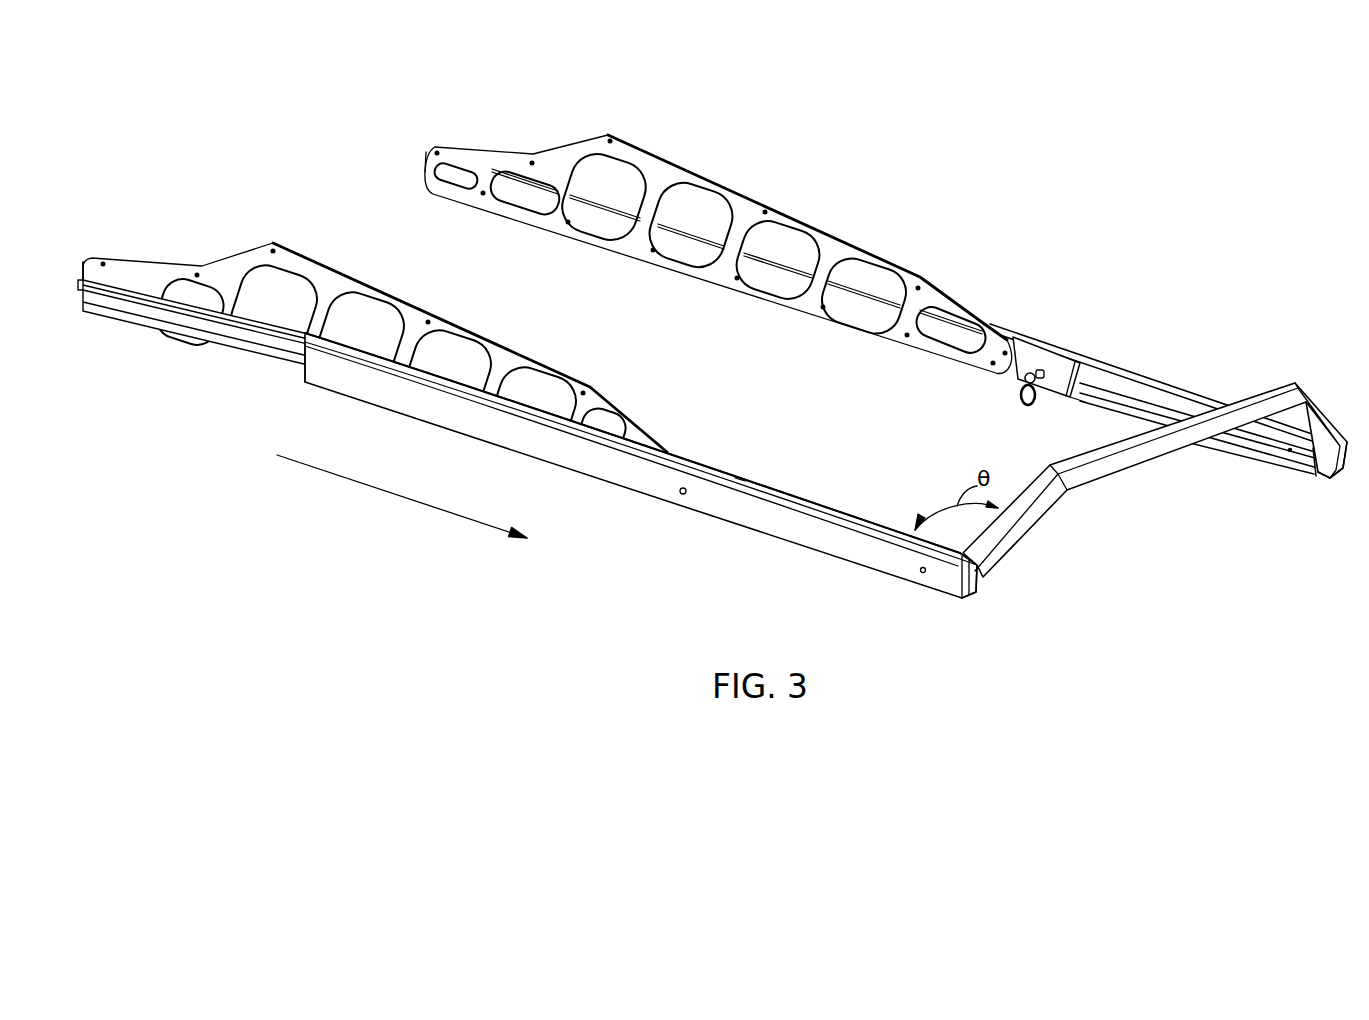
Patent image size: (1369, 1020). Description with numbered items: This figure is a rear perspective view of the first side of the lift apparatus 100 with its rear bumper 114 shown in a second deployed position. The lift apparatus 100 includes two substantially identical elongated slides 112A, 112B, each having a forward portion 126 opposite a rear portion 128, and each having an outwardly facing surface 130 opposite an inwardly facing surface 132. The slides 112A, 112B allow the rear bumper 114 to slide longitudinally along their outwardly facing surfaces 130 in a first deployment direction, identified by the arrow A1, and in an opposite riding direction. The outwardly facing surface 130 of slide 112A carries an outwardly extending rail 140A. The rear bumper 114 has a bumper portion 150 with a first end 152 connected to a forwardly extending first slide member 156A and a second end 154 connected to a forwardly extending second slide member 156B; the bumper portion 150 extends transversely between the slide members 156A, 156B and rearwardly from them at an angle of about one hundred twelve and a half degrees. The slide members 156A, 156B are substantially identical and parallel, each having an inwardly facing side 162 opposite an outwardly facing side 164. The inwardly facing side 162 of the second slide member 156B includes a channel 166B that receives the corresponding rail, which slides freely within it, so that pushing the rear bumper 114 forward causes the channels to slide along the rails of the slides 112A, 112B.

The lift apparatus 100 is at (1146, 109).
The slide 112A is at (100, 300).
The slide 112B is at (718, 254).
The rear bumper 114 is at (1162, 384).
The forward portion 126 is at (86, 268).
The rear portion 128 is at (740, 479).
The outwardly facing surface 130 is at (255, 352).
The inwardly facing surface 132 is at (616, 226).
The rail 140A is at (188, 318).
The bumper portion 150 is at (1143, 460).
The first end 152 is at (975, 598).
The second end 154 is at (1316, 478).
The first slide member 156A is at (772, 520).
The second slide member 156B is at (1277, 455).
The inwardly facing side 162 is at (1113, 382).
The outwardly facing side 164 is at (496, 430).
The channel 166B is at (1138, 404).
The arrow A1 is at (388, 494).